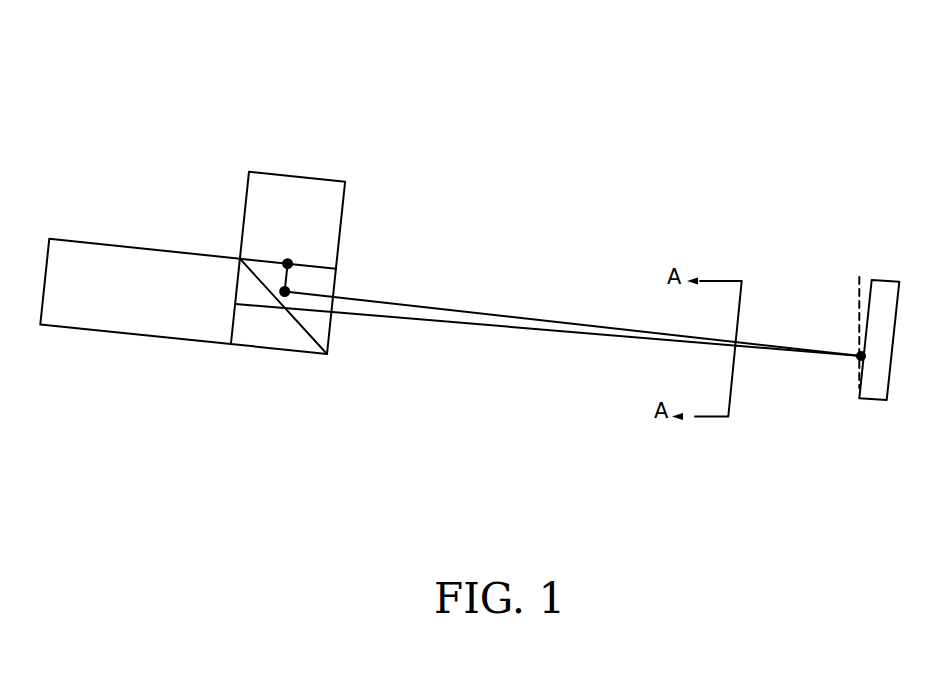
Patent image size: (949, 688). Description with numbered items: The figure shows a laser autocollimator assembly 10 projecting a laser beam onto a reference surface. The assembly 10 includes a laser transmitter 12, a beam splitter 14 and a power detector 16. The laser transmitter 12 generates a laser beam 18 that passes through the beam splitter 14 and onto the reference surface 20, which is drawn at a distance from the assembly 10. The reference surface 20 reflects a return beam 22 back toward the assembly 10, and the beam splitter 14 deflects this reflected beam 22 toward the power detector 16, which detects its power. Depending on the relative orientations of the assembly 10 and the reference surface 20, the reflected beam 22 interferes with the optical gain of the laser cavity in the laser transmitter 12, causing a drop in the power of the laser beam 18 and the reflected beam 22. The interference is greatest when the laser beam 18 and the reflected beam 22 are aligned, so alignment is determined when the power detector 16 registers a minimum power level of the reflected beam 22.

The laser autocollimator assembly 10 is at (113, 83).
The laser transmitter 12 is at (106, 332).
The beam splitter 14 is at (270, 350).
The power detector 16 is at (346, 205).
The laser beam 18 is at (413, 319).
The reference surface 20 is at (885, 280).
The reflected beam 22 is at (482, 311).